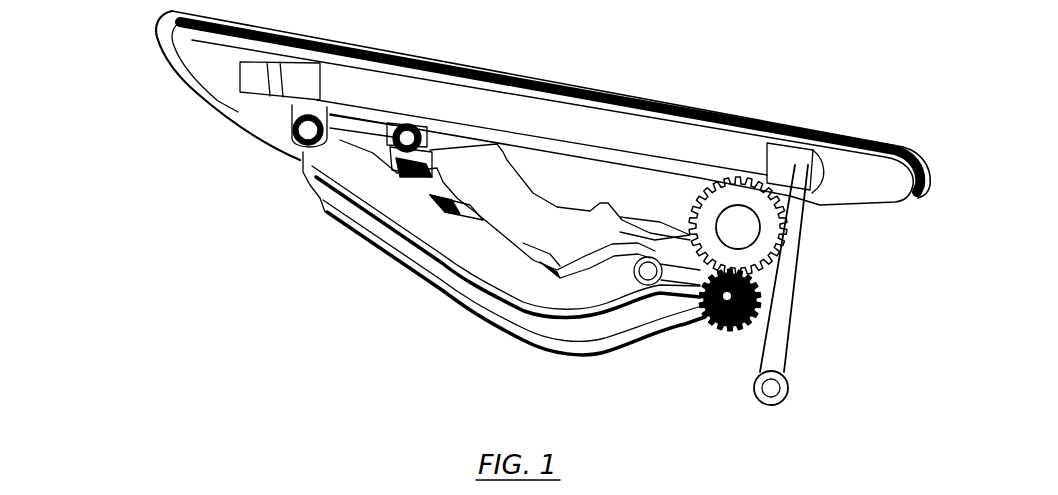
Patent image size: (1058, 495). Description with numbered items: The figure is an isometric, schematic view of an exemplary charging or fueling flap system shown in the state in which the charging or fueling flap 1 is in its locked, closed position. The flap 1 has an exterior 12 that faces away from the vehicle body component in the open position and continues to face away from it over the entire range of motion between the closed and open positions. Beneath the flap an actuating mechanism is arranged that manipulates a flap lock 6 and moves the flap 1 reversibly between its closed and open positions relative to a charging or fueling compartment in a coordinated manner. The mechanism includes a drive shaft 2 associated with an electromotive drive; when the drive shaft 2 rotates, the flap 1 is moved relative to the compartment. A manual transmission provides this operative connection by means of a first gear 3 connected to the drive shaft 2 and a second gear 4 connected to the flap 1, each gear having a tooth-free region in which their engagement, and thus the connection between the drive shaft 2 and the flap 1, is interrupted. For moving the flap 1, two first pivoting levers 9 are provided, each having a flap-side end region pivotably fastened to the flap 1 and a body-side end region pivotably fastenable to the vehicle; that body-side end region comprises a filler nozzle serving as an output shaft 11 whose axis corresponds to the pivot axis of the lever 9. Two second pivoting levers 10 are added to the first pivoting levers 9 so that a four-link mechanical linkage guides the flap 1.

The charging or fueling flap 1 is at (213, 53).
The exterior of the charging or fueling flap 12 is at (545, 76).
The flap lock 6 is at (812, 213).
The first gear 3 is at (765, 318).
The first pivoting lever 9 is at (510, 193).
The second pivoting lever 10 is at (370, 225).
The second gear 4 is at (745, 256).
The output shaft 11 is at (741, 227).
The drive shaft 2 is at (748, 301).